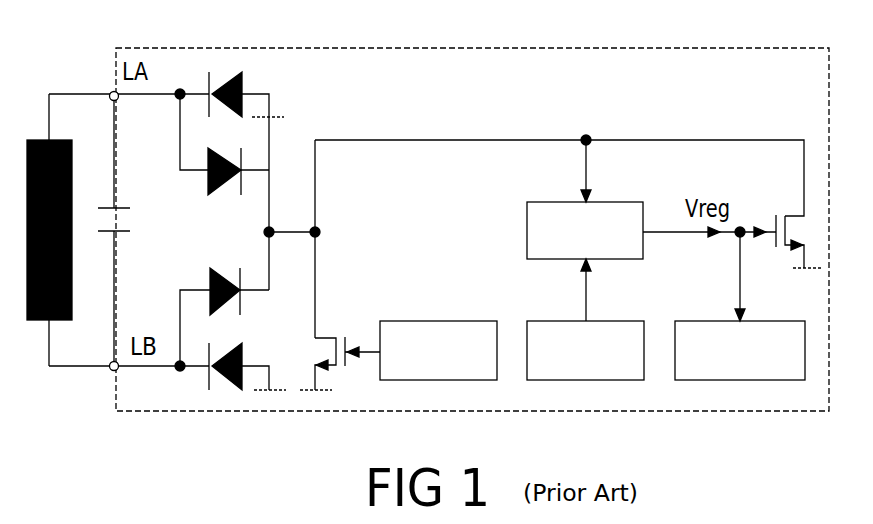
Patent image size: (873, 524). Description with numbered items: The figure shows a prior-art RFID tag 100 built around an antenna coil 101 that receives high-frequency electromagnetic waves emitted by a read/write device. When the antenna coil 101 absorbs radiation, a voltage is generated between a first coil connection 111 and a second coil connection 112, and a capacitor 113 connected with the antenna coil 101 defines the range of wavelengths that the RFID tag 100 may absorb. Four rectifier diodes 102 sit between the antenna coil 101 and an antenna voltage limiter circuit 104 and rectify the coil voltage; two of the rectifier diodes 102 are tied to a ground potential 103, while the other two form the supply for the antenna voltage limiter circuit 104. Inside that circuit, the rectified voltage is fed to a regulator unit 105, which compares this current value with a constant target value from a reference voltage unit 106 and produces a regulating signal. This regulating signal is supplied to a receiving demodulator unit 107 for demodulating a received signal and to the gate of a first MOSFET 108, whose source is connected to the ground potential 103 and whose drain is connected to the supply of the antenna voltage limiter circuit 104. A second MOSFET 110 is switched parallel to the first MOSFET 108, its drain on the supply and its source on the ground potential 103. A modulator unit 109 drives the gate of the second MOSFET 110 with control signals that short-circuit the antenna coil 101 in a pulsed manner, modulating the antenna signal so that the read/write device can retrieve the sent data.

The RFID tag 100 is at (96, 54).
The antenna coil 101 is at (71, 316).
The rectifier diodes 102 is at (238, 70).
The ground potential 103 is at (281, 118).
The antenna voltage limiter circuit 104 is at (500, 119).
The regulator unit 105 is at (641, 260).
The reference voltage unit 106 is at (598, 381).
The receiving demodulator unit 107 is at (695, 381).
The first MOSFET 108 is at (777, 249).
The modulator unit 109 is at (498, 381).
The second MOSFET 110 is at (337, 337).
The first coil connection 111 is at (117, 100).
The second coil connection 112 is at (116, 372).
The capacitor 113 is at (128, 231).